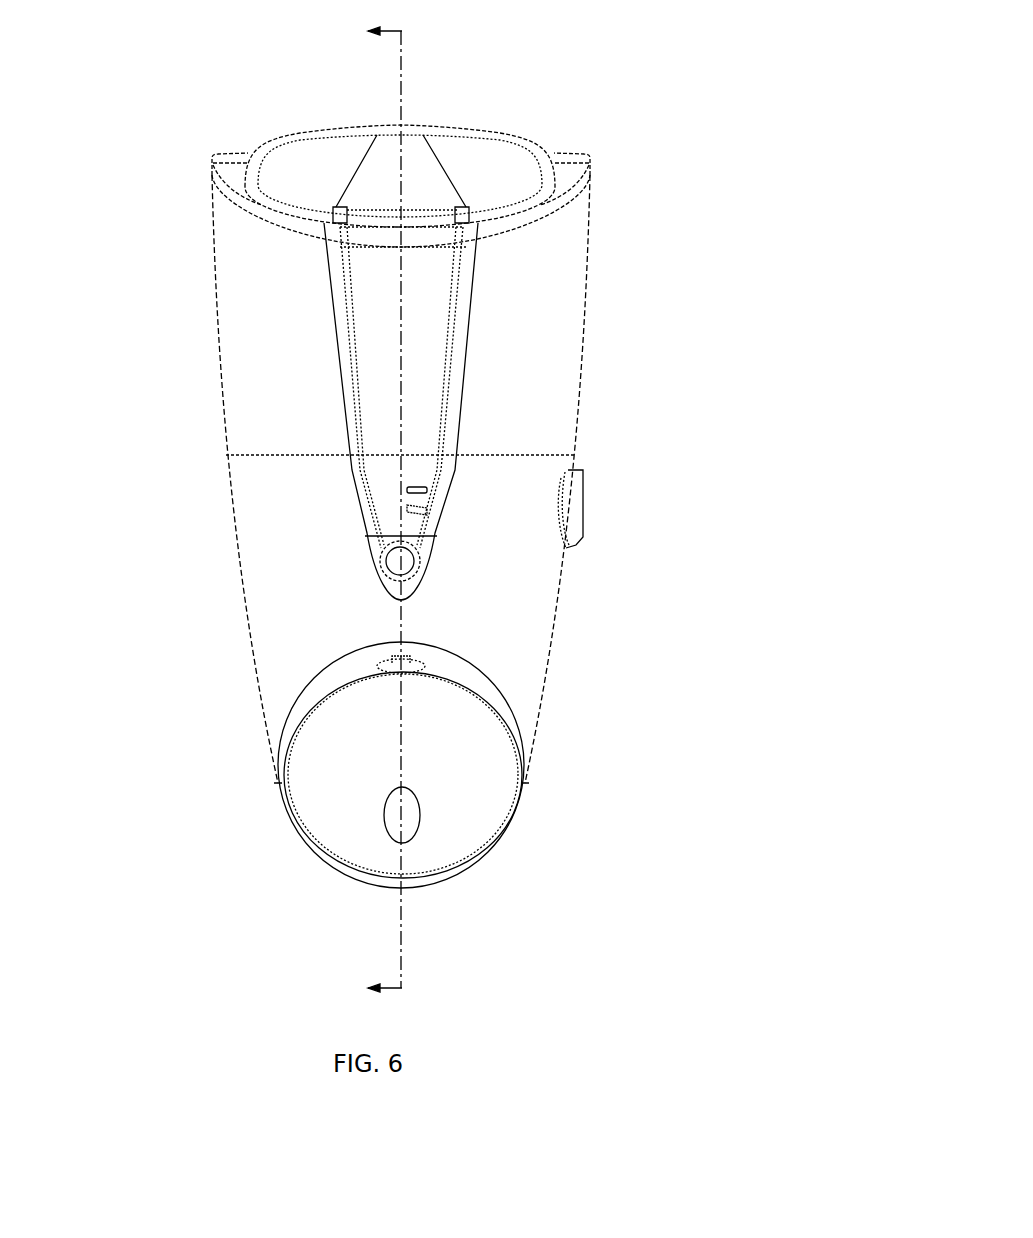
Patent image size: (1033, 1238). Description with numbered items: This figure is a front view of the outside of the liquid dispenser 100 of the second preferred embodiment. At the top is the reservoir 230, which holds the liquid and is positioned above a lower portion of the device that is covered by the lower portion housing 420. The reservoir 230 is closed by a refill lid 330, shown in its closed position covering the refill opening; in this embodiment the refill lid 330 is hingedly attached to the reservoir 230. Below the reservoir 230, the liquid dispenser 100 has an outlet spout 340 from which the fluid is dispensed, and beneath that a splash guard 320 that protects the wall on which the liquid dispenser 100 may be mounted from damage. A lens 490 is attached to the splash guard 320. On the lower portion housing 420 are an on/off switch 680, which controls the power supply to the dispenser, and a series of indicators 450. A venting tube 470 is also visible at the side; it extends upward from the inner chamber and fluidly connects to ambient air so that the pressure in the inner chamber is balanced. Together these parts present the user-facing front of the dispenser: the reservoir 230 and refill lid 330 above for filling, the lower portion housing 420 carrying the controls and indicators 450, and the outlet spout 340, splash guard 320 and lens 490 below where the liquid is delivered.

The liquid dispenser 100 is at (705, 972).
The reservoir 230 is at (255, 353).
The splash guard 320 is at (330, 785).
The refill lid 330 is at (325, 167).
The outlet spout 340 is at (383, 662).
The lower portion housing 420 is at (257, 537).
The indicators 450 is at (430, 500).
The venting tube 470 is at (583, 517).
The lens 490 is at (410, 813).
The on/off switch 680 is at (413, 560).